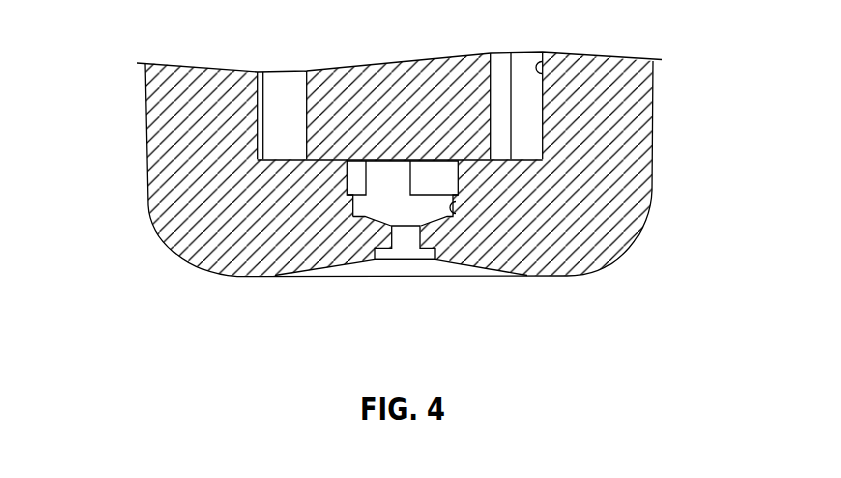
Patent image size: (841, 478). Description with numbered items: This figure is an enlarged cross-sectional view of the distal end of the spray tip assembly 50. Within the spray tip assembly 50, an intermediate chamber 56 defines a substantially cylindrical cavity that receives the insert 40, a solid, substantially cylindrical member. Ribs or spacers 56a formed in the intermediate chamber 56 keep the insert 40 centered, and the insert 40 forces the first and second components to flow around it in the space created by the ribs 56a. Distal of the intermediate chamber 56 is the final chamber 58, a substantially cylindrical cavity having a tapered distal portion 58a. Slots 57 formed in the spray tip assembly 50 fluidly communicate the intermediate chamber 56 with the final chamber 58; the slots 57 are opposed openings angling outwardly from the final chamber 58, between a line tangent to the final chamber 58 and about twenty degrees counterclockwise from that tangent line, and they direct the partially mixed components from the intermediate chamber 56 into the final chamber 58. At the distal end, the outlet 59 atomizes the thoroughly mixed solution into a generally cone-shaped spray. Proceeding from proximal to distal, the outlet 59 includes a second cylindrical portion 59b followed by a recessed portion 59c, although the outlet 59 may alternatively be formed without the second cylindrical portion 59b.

The insert 40 is at (403, 72).
The spray tip assembly 50 is at (118, 77).
The intermediate chamber 56 is at (543, 60).
The ribs or spacers 56a is at (283, 82).
The slots 57 is at (354, 182).
The final chamber 58 is at (450, 214).
The tapered distal portion 58a is at (390, 227).
The outlet 59 is at (375, 303).
The second cylindrical portion 59b is at (436, 261).
The recessed portion 59c is at (492, 265).